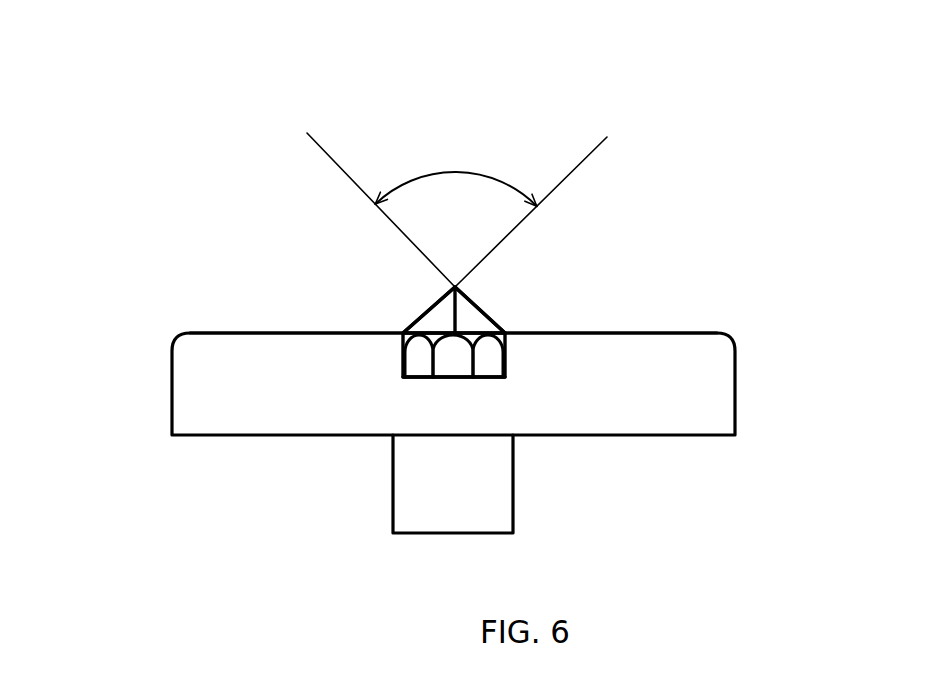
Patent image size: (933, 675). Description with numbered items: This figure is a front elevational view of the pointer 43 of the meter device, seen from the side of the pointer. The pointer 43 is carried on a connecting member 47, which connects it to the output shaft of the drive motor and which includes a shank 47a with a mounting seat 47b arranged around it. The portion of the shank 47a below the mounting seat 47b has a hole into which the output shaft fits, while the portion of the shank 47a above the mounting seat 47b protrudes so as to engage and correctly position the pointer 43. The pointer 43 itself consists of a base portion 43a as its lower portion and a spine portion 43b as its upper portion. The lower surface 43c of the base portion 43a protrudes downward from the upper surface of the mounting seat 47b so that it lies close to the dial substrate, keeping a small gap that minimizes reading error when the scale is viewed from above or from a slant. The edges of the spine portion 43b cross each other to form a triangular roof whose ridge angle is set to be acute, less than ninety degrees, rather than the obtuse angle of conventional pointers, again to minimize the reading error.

The pointer 43 is at (495, 314).
The base portion 43a is at (507, 353).
The spine portion 43b is at (447, 287).
The lower surface 43c is at (457, 377).
The connecting member 47 is at (737, 407).
The shank 47a is at (393, 492).
The mounting seat 47b is at (203, 331).